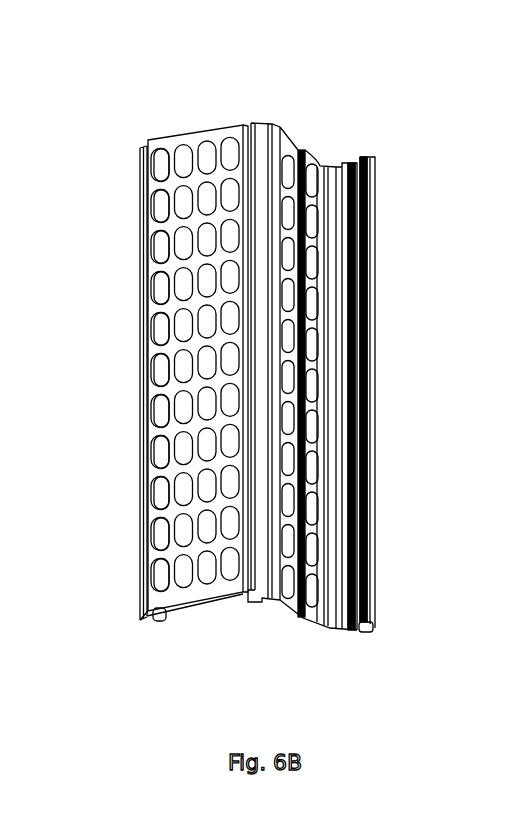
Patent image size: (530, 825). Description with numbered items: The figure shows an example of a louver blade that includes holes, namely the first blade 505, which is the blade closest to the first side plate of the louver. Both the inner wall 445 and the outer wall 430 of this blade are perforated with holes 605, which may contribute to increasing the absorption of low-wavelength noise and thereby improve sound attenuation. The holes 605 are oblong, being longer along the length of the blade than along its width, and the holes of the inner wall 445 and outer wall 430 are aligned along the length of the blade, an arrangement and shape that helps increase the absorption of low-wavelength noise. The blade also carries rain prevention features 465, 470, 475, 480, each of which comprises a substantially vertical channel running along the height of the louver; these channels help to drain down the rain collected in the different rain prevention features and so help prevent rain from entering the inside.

The first blade 505 is at (118, 150).
The holes 605 is at (187, 152).
The rain prevention feature 470 is at (257, 140).
The rain prevention feature 475 is at (298, 148).
The outer wall 430 is at (217, 603).
The rain prevention feature 465 is at (145, 620).
The inner wall 445 is at (314, 622).
The rain prevention feature 480 is at (372, 627).